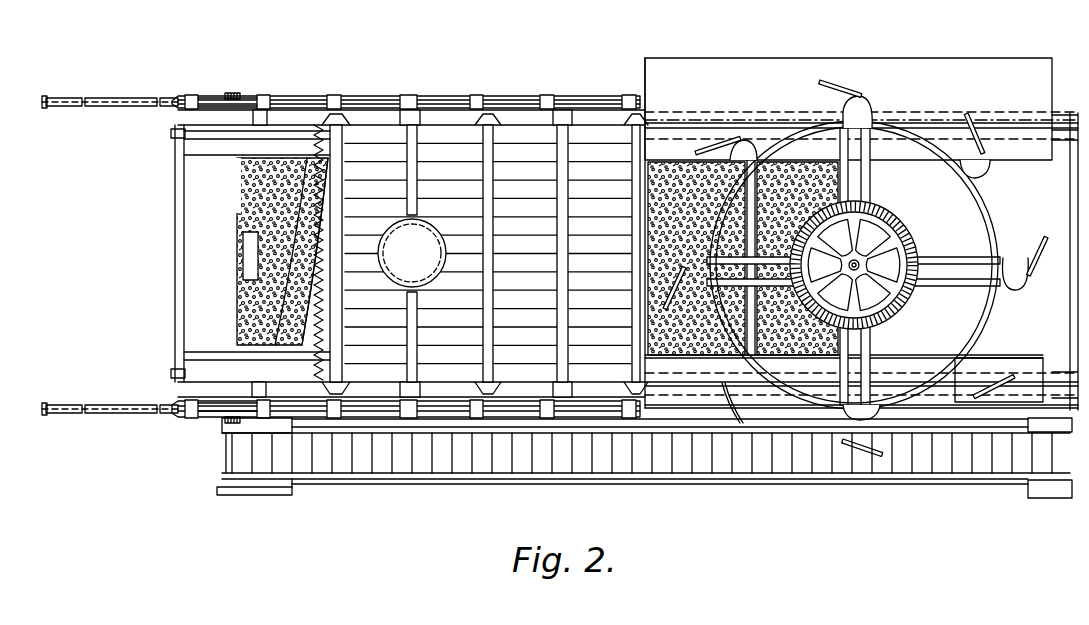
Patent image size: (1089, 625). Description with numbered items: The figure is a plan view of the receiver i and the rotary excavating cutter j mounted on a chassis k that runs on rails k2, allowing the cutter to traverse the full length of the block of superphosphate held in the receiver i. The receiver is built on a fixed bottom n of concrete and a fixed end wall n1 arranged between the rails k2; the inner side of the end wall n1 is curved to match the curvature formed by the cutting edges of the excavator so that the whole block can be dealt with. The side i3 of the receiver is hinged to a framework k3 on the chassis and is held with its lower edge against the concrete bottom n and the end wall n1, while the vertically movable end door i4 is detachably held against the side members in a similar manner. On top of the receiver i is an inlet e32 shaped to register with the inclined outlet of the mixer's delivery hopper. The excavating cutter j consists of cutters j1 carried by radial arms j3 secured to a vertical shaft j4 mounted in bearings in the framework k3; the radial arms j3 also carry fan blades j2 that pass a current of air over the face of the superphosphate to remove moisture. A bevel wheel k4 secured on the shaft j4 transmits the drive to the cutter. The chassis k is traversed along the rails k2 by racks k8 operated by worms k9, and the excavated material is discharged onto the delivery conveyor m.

The inlet e32 is at (412, 253).
The receiver i is at (455, 147).
The side of the receiver i3 is at (410, 122).
The end door i4 is at (640, 150).
The rotary excavating cutter j is at (990, 228).
The cutter j1 is at (880, 457).
The fan blade j2 is at (379, 397).
The radial arm j3 is at (924, 262).
The vertical shaft j4 is at (858, 268).
The chassis k is at (1047, 412).
The rails k2 is at (96, 406).
The framework k3 is at (525, 107).
The bevel wheel k4 is at (878, 312).
The rack k8 is at (213, 418).
The worm k9 is at (232, 425).
The delivery conveyor m is at (787, 480).
The fixed bottom n is at (668, 355).
The end wall n1 is at (300, 197).